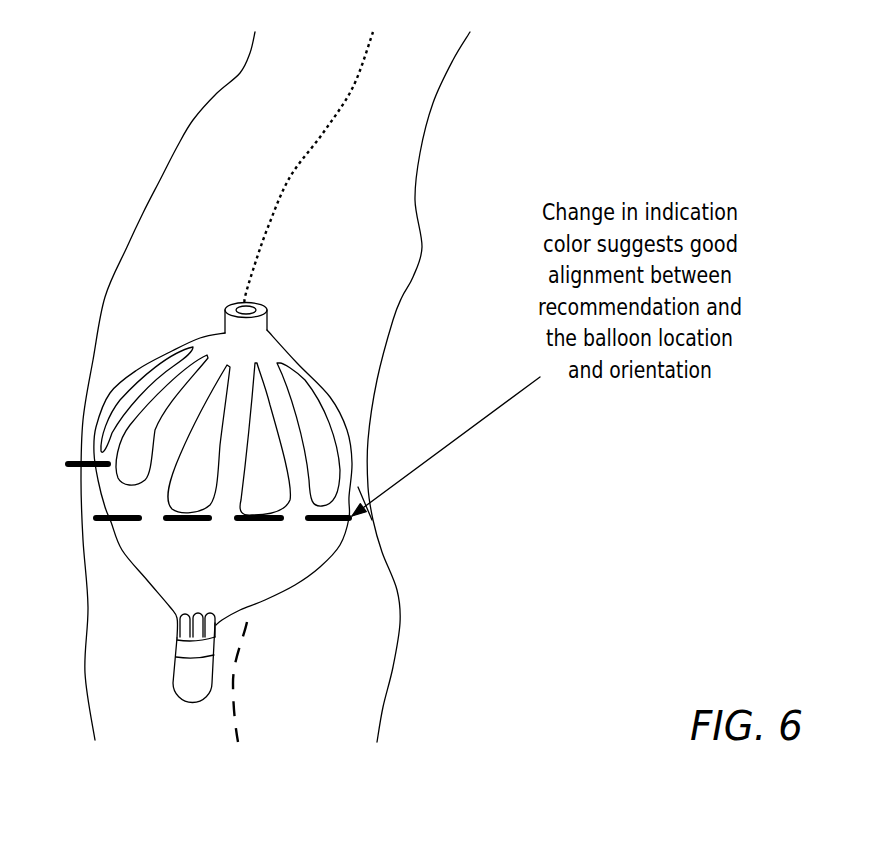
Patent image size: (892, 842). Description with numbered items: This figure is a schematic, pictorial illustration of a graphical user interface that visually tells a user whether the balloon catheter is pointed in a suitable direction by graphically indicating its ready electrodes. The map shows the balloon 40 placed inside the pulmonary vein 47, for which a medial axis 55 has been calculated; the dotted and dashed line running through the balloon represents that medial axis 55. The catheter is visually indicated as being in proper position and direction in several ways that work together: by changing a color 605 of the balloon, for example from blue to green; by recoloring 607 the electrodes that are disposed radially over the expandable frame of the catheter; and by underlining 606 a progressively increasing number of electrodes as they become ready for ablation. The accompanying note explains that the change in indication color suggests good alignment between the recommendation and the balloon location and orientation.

The balloon catheter 40 is at (226, 587).
The pulmonary vein 47 is at (341, 701).
The medial axis 55 is at (268, 228).
The color 605 is at (252, 610).
The underlining 606 is at (67, 461).
The recoloring 607 is at (165, 410).